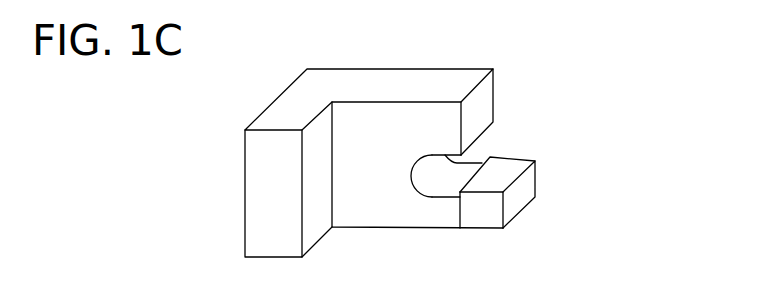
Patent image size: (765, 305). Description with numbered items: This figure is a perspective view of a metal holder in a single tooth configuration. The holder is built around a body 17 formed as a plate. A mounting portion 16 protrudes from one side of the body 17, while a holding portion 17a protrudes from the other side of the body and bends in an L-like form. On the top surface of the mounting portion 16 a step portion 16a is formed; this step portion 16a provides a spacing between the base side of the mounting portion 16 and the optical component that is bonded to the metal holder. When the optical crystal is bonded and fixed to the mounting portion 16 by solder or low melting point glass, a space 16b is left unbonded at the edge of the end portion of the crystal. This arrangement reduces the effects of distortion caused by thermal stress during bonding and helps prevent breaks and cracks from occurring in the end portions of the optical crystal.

The body 17 is at (402, 78).
The holding portion 17a is at (262, 179).
The mounting portion 16 is at (530, 183).
The step portion 16a is at (504, 160).
The space 16b is at (452, 197).